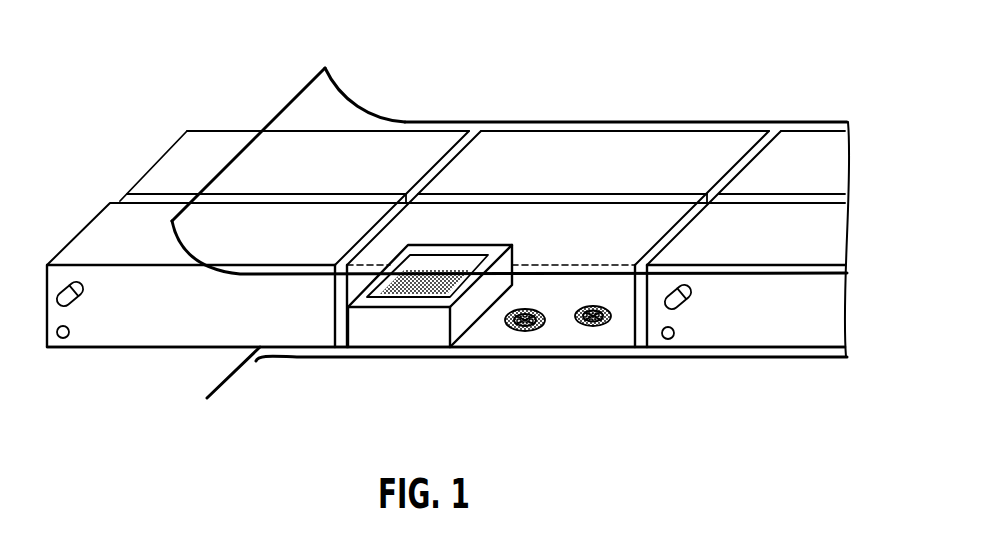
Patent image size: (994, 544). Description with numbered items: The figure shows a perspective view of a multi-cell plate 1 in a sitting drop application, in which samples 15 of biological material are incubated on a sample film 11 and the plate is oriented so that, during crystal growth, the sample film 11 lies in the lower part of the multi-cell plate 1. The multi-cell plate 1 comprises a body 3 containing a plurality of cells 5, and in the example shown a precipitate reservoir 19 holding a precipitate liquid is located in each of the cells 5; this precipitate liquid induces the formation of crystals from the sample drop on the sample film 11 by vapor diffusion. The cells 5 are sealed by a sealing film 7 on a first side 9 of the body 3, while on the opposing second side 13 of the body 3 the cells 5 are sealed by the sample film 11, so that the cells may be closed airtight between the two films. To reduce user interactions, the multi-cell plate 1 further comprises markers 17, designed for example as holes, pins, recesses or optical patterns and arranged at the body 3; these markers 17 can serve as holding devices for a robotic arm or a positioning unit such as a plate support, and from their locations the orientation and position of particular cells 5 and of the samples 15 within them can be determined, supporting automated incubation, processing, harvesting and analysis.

The multi-cell plate 1 is at (448, 229).
The body 3 is at (118, 338).
The cells 5 is at (163, 181).
The sealing film 7 is at (337, 107).
The first side 9 is at (509, 152).
The sample film 11 is at (258, 357).
The second side 13 is at (180, 350).
The sample 15 is at (521, 342).
The markers 17 is at (72, 332).
The precipitate reservoir 19 is at (398, 337).